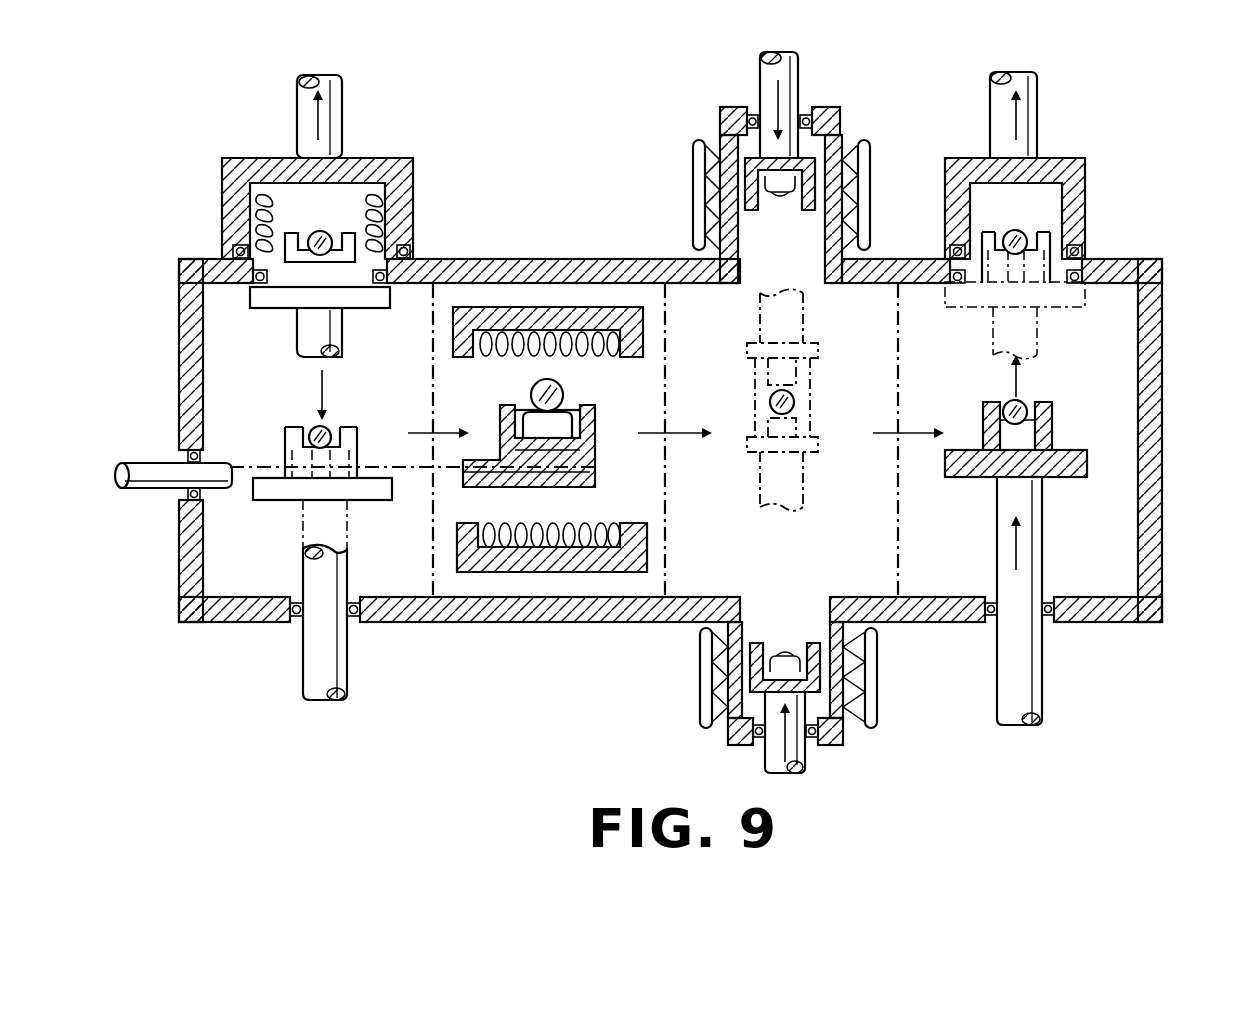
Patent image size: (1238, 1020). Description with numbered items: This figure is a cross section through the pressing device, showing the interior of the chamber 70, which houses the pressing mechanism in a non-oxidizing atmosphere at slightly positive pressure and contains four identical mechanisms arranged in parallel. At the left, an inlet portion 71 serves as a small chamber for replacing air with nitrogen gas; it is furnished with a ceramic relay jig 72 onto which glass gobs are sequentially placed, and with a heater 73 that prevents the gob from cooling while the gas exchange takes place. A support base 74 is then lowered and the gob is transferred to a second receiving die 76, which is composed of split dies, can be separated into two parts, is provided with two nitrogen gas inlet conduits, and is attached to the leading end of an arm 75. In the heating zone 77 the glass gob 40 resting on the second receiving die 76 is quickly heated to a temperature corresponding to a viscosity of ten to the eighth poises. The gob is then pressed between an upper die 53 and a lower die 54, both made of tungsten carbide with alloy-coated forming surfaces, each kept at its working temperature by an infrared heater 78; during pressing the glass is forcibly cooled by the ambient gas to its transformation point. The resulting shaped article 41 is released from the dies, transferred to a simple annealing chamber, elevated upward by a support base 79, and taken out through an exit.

The chamber 70 is at (1141, 440).
The inlet portion 71 is at (352, 195).
The relay jig 72 is at (286, 247).
The heater 73 is at (387, 198).
The support base 74 is at (330, 658).
The arm 75 is at (150, 478).
The second receiving die 76 is at (500, 409).
The heating zone 77 is at (508, 380).
The glass gob 40 is at (564, 393).
The shaped article 41 is at (1000, 233).
The upper die 53 is at (800, 160).
The lower die 54 is at (785, 662).
The infrared heater 78 is at (700, 200).
The support base 79 is at (1018, 658).